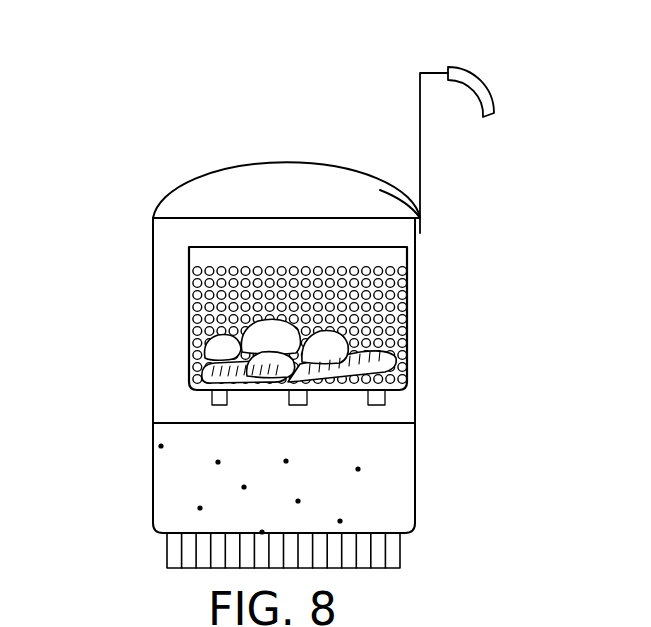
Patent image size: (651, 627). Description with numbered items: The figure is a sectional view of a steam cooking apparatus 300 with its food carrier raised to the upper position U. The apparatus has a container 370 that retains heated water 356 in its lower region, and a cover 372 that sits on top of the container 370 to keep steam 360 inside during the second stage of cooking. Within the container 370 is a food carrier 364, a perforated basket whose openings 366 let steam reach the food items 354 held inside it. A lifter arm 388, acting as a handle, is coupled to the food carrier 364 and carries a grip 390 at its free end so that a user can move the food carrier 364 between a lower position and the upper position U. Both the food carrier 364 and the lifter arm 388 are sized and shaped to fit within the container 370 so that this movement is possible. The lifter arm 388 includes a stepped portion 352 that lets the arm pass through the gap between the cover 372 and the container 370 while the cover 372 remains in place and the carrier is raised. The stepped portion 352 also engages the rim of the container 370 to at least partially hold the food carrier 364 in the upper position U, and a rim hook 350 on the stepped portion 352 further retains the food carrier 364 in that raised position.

The steam cooking apparatus 300 is at (300, 133).
The rim hook 350 is at (422, 220).
The stepped portion 352 is at (418, 215).
The food items 354 is at (252, 348).
The heated water 356 is at (393, 457).
The steam 360 is at (172, 275).
The food carrier 364 is at (407, 290).
The openings 366 is at (222, 266).
The container 370 is at (415, 373).
The cover 372 is at (258, 160).
The lifter arm 388 is at (422, 162).
The grip 390 is at (493, 84).
The upper position U is at (438, 321).